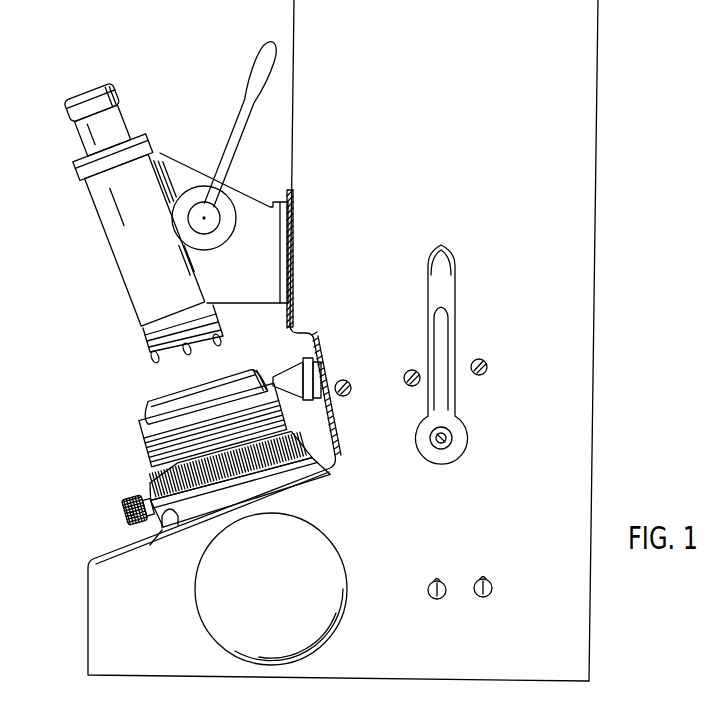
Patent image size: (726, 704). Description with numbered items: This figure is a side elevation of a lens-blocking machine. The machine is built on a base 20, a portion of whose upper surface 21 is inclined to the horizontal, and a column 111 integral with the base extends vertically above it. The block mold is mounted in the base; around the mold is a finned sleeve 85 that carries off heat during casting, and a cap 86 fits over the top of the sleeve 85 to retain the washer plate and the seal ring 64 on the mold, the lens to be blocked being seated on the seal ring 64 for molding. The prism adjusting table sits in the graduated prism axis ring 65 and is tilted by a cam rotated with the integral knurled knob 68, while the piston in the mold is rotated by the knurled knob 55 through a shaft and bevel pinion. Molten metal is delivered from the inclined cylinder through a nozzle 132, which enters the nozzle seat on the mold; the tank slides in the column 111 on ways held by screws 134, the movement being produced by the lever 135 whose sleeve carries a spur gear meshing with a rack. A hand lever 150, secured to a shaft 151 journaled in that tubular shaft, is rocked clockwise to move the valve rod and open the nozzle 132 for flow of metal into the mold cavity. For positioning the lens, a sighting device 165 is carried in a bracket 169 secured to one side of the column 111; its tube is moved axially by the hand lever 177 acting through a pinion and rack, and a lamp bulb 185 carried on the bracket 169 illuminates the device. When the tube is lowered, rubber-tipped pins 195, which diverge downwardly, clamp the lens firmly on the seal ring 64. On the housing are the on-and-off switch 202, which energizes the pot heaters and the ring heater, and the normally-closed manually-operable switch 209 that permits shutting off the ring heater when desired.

The base 20 is at (590, 608).
The column 111 is at (596, 120).
The sighting device 165 is at (70, 140).
The bracket 169 is at (118, 263).
The hand lever 177 is at (250, 107).
The lamp bulb 185 is at (246, 301).
The rubber-tipped pins 195 is at (152, 356).
The seal ring 64 is at (208, 386).
The cap 86 is at (148, 418).
The finned sleeve 85 is at (148, 443).
The graduated prism axis ring 65 is at (237, 476).
The knurled knob 68 is at (122, 510).
The upper surface 21 is at (171, 531).
The nozzle 132 is at (300, 375).
The screws 134 is at (404, 380).
The lever 135 is at (452, 300).
The hand lever 150 is at (442, 397).
The shaft 151 is at (447, 440).
The knurled knob 55 is at (347, 574).
The on-and-off switch 202 is at (431, 599).
The manually-operable switch 209 is at (486, 598).